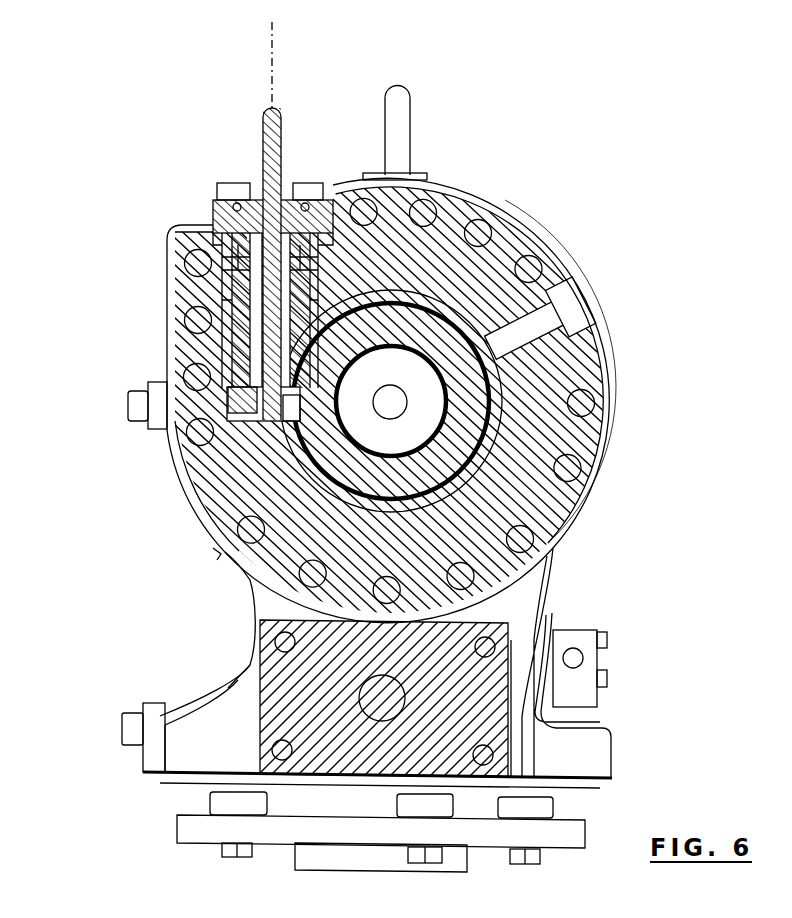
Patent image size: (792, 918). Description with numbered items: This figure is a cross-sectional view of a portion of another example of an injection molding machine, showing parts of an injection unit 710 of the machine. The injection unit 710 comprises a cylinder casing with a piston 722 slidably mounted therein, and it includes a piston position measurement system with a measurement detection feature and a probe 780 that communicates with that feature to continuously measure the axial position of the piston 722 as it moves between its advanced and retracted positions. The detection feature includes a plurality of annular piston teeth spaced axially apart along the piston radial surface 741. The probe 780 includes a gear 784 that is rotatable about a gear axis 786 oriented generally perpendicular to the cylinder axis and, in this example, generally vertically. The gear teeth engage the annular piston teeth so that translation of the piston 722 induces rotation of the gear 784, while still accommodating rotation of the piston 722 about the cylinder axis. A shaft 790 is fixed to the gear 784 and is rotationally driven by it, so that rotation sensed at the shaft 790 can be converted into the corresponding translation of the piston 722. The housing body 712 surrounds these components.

The injection unit 710 is at (558, 178).
The housing body 712 is at (581, 381).
The piston 722 is at (366, 350).
The piston radial surface 741 is at (290, 447).
The probe 780 is at (298, 165).
The gear 784 is at (243, 398).
The gear axis 786 is at (275, 92).
The shaft 790 is at (266, 182).